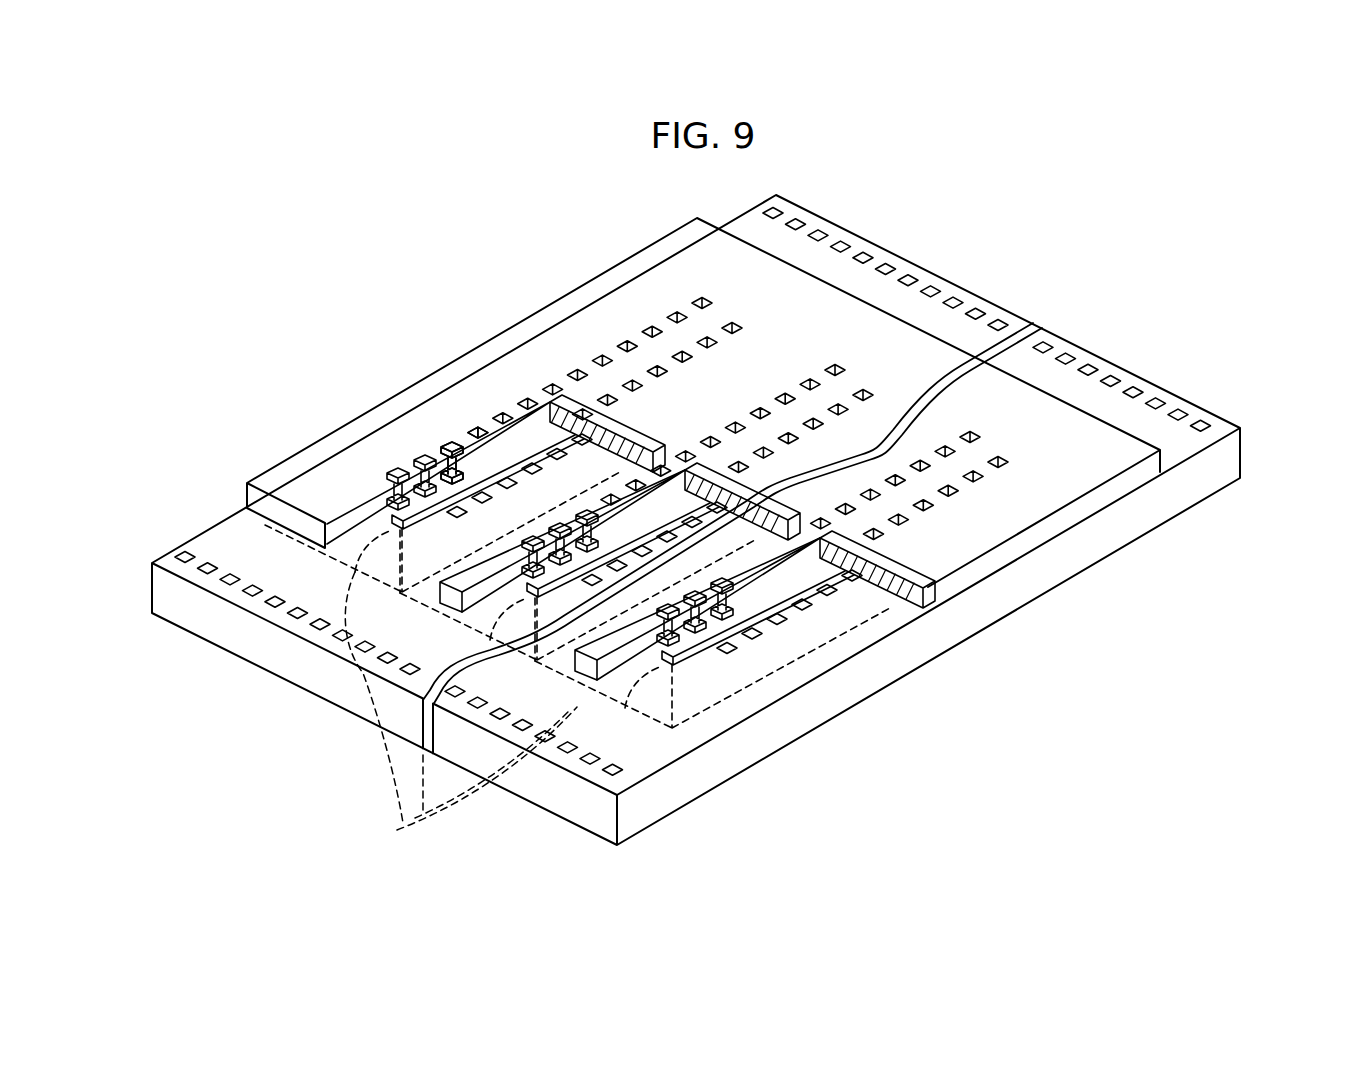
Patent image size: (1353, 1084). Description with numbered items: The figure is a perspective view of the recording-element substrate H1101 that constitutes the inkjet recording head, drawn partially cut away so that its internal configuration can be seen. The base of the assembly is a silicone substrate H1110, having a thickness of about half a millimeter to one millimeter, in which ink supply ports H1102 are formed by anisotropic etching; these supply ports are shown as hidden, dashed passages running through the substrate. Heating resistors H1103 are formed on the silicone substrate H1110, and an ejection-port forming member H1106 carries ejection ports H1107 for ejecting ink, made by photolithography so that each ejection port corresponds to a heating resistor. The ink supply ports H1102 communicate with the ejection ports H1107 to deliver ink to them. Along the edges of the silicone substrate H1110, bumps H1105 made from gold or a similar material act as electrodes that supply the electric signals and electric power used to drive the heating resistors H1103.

The recording-element substrate H1101 is at (852, 737).
The ink supply ports H1102 is at (403, 826).
The heating resistors H1103 is at (377, 533).
The bumps H1105 is at (1112, 377).
The ejection-port forming member H1106 is at (447, 440).
The ejection ports H1107 is at (473, 428).
The silicone substrate H1110 is at (1120, 522).